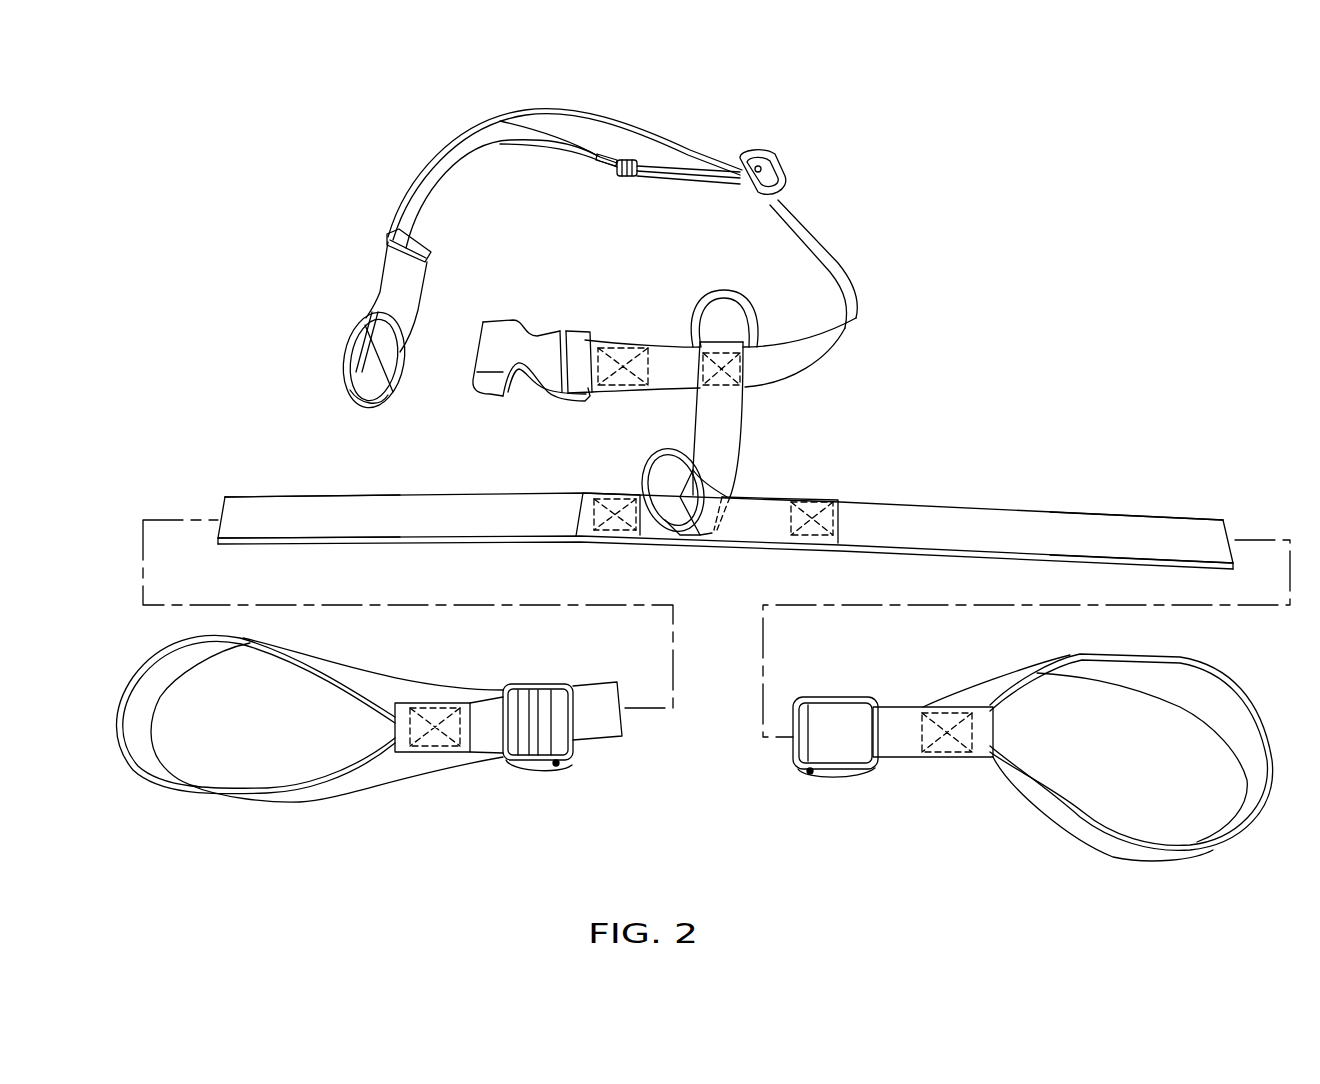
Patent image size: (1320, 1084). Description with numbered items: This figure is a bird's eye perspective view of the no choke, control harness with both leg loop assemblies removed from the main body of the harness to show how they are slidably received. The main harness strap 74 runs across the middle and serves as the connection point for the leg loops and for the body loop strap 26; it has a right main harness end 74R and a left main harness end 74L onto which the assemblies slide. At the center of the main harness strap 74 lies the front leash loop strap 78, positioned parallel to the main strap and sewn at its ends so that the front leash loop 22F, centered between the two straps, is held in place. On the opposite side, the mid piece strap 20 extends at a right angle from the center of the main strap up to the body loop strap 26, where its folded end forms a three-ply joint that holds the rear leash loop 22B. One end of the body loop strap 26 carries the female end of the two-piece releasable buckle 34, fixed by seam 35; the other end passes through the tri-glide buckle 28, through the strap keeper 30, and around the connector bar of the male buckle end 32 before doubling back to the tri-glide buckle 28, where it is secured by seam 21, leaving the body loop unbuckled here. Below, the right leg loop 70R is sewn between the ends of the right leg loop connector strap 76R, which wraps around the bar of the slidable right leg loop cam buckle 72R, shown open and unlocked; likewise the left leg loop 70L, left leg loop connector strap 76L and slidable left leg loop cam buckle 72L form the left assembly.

The mid piece strap 20 is at (748, 400).
The seam 21 is at (626, 180).
The rear leash loop 22B is at (728, 288).
The front leash loop 22F is at (646, 462).
The body loop strap 26 is at (630, 128).
The tri-glide buckle 28 is at (788, 182).
The strap keeper 30 is at (385, 240).
The male end of two-piece buckle 32 is at (352, 325).
The female end of two-piece releasable buckle 34 is at (535, 322).
The seam 35 is at (622, 346).
The main harness strap 74 is at (725, 496).
The right main harness end 74R is at (283, 495).
The left main harness end 74L is at (1166, 518).
The front leash loop strap 78 is at (765, 497).
The right leg loop 70R is at (297, 802).
The left leg loop 70L is at (1098, 842).
The slidable right leg loop cam buckle 72R is at (543, 770).
The slidable left leg loop cam buckle 72L is at (826, 775).
The right leg loop connector strap 76R is at (470, 758).
The left leg loop connector strap 76L is at (906, 760).